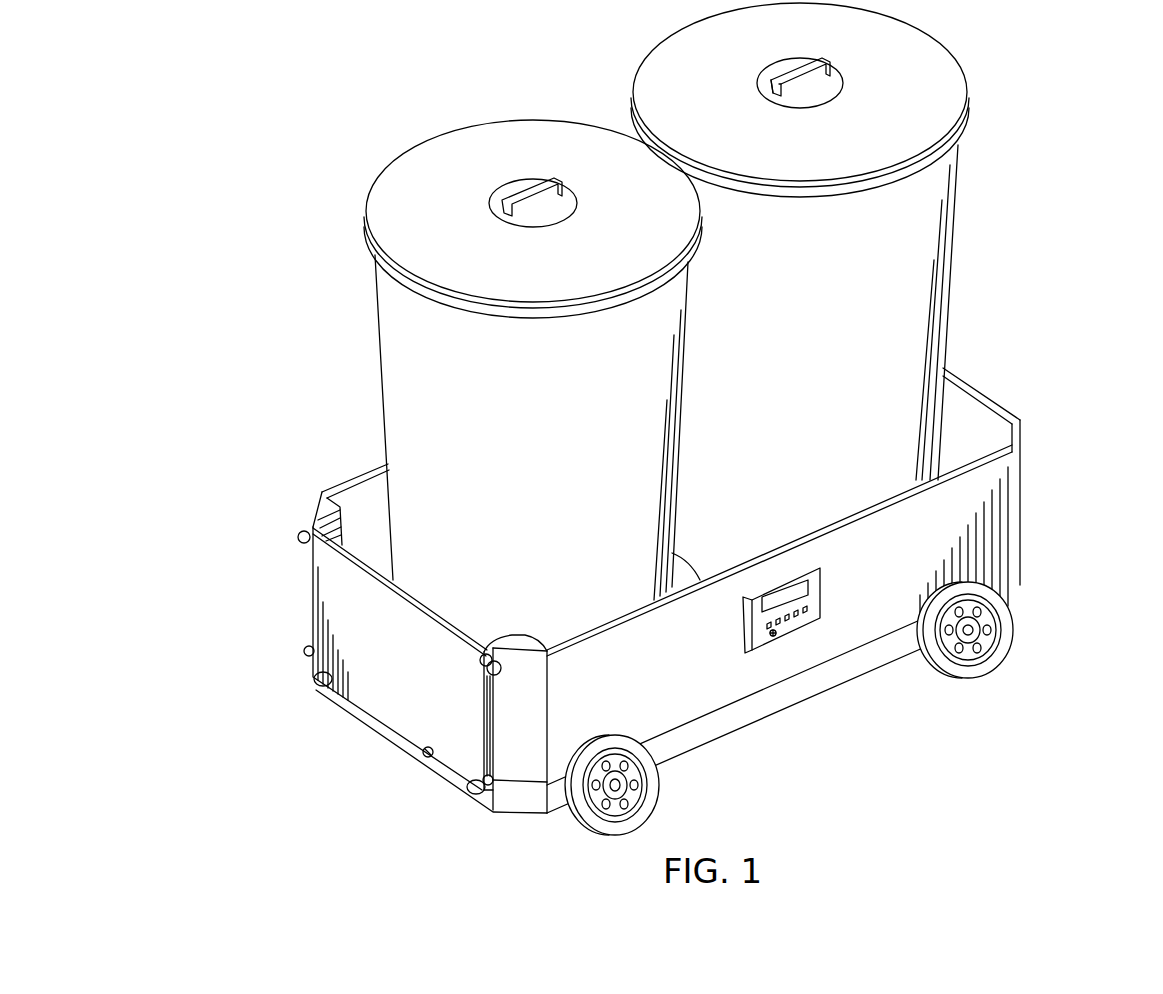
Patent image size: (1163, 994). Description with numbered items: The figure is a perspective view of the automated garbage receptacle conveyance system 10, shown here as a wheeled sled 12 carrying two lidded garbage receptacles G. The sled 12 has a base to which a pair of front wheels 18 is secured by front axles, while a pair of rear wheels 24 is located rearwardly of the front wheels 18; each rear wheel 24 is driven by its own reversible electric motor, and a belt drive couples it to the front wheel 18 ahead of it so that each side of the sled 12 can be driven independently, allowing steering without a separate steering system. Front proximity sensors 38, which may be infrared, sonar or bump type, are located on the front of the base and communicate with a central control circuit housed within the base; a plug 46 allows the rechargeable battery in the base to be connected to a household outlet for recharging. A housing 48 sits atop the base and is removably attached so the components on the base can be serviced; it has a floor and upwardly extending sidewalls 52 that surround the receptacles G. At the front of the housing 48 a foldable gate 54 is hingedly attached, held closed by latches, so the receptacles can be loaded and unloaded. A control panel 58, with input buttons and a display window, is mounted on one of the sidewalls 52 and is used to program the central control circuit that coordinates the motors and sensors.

The automated garbage receptacle conveyance system 10 is at (212, 514).
The sled 12 is at (774, 729).
The front wheels 18 is at (590, 812).
The rear wheels 24 is at (993, 655).
The front proximity sensors 38 is at (316, 678).
The plug 46 is at (422, 756).
The housing 48 is at (1036, 496).
The sidewalls 52 is at (978, 410).
The foldable gate 54 is at (380, 678).
The control panel 58 is at (812, 622).
The garbage container G is at (932, 220).